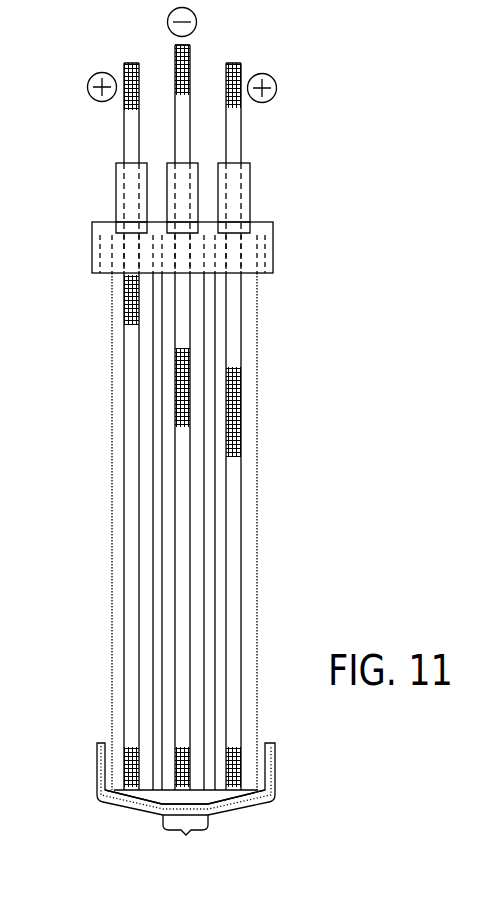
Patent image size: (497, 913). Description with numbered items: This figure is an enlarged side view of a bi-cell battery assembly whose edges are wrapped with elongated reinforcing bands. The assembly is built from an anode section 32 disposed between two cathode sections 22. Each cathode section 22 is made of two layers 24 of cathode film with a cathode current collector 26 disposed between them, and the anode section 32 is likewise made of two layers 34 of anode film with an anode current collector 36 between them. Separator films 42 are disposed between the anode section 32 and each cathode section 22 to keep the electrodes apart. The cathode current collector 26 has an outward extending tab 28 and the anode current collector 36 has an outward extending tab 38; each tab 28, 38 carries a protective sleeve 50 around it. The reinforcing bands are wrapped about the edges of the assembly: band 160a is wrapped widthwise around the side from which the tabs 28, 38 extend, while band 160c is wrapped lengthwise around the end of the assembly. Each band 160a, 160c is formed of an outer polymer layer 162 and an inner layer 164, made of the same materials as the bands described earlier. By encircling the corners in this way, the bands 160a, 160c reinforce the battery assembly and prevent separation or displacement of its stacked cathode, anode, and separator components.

The cathode section 22 is at (258, 363).
The layer of cathode film 24 is at (248, 323).
The cathode current collector 26 is at (237, 460).
The tab 28 is at (130, 115).
The anode section 32 is at (185, 841).
The layer of anode film 34 is at (198, 608).
The anode current collector 36 is at (187, 640).
The tab 38 is at (173, 57).
The separator film 42 is at (160, 557).
The protective sleeve 50 is at (122, 186).
The reinforcing band 160a is at (275, 240).
The reinforcing band 160c is at (280, 797).
The outer polymer layer 162 is at (273, 776).
The inner layer 164 is at (267, 760).